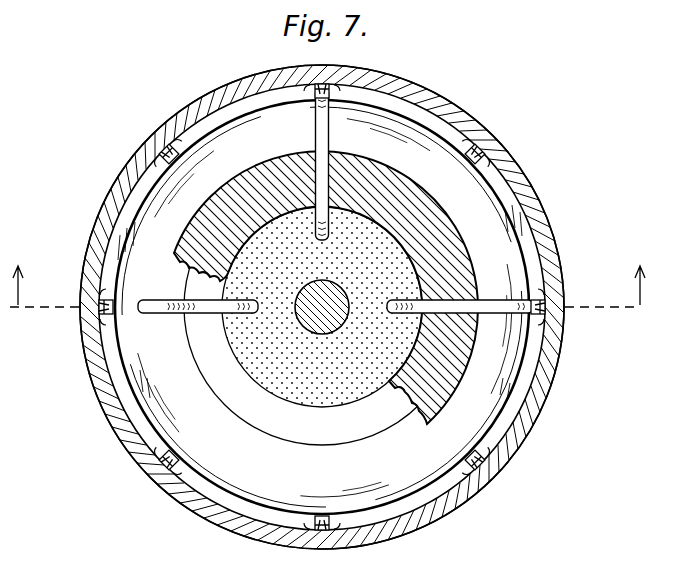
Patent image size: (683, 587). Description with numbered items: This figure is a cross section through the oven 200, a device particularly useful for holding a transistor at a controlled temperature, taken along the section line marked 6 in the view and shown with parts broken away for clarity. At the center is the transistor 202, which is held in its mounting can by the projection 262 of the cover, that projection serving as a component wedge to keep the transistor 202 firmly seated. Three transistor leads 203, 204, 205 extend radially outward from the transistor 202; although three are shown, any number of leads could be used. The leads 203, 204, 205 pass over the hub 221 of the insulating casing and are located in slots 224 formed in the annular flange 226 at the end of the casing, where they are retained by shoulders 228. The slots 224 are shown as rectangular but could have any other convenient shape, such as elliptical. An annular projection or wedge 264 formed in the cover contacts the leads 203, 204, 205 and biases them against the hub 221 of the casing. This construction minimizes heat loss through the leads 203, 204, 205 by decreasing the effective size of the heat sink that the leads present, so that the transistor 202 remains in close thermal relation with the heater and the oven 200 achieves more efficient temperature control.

The oven 200 is at (606, 114).
The transistor 202 is at (341, 440).
The transistor lead 203 is at (168, 315).
The transistor lead 204 is at (322, 128).
The transistor lead 205 is at (496, 313).
The hub 221 is at (340, 479).
The slots 224 is at (317, 86).
The annular flange 226 is at (134, 420).
The shoulders 228 is at (332, 84).
The projection 262 is at (306, 326).
The annular projection or wedge 264 is at (412, 356).
The section line 6- 6 is at (327, 305).